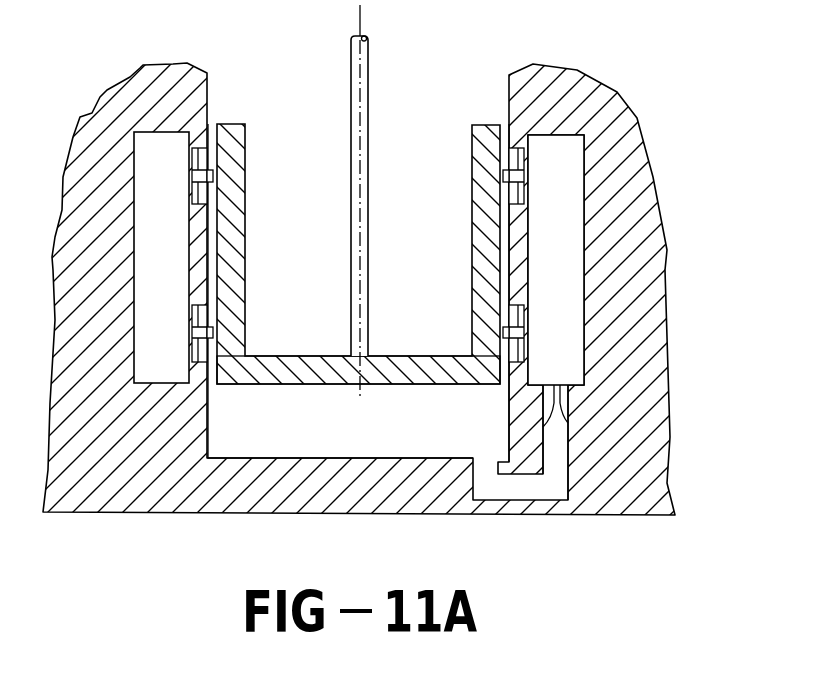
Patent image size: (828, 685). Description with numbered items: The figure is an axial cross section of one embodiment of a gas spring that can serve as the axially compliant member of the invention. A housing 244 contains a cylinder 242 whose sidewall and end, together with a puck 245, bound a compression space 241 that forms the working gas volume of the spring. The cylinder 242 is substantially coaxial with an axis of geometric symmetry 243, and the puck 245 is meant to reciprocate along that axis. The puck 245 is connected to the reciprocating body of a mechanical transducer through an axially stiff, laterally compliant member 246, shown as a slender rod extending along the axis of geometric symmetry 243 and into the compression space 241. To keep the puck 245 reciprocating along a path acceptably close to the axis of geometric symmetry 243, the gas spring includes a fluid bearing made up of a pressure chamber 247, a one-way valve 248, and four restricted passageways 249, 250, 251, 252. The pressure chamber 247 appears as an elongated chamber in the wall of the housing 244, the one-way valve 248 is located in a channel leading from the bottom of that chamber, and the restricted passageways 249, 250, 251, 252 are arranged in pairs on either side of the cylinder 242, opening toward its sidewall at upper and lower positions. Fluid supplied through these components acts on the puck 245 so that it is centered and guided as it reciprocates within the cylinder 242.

The compression space 241 is at (485, 441).
The cylinder 242 is at (208, 423).
The axis of geometric symmetry 243 is at (358, 29).
The housing 244 is at (140, 438).
The puck 245 is at (337, 373).
The axially stiff, laterally compliant member 246 is at (368, 77).
The pressure chamber 247 is at (550, 213).
The one-way valve 248 is at (560, 408).
The restricted passageway 249 is at (515, 175).
The restricted passageway 250 is at (512, 332).
The restricted passageway 251 is at (203, 174).
The restricted passageway 252 is at (200, 333).